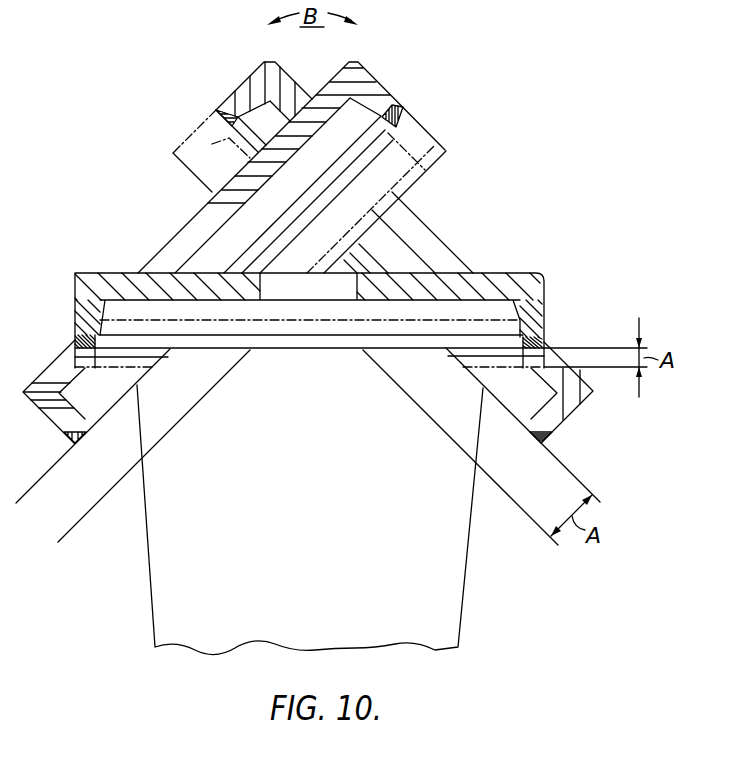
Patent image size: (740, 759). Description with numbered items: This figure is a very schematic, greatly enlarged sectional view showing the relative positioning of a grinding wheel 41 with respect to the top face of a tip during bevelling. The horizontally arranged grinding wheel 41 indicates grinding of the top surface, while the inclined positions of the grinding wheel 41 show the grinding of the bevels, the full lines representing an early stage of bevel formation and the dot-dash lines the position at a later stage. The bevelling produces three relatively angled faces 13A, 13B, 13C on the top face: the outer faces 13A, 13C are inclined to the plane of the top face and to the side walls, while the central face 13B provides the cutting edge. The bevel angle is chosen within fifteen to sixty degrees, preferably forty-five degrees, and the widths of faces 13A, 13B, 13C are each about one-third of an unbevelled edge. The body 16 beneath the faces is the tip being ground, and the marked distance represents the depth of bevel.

The grinding wheel 41 is at (118, 271).
The inclined bevel face 13A is at (222, 394).
The central face 13B is at (314, 350).
The inclined bevel face 13C is at (406, 394).
The workpiece 16 is at (314, 574).